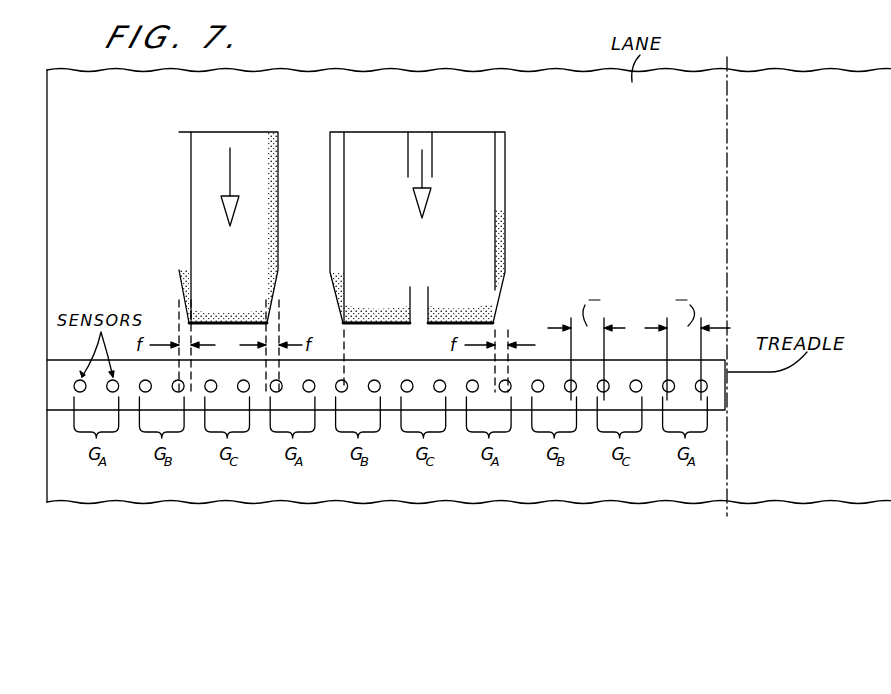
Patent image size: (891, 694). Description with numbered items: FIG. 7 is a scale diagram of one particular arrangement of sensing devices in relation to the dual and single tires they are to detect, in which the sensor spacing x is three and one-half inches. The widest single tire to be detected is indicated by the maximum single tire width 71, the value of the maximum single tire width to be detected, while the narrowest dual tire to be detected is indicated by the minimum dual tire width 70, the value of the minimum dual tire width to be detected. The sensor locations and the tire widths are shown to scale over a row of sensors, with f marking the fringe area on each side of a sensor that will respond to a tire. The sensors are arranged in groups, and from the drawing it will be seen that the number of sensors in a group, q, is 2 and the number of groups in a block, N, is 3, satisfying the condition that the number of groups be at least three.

The minimum dual tire width 70 is at (480, 170).
The maximum single tire width 71 is at (192, 174).
The q, number of sensors per group 2 is at (585, 316).
The N, number of sensor groups 3 is at (652, 326).